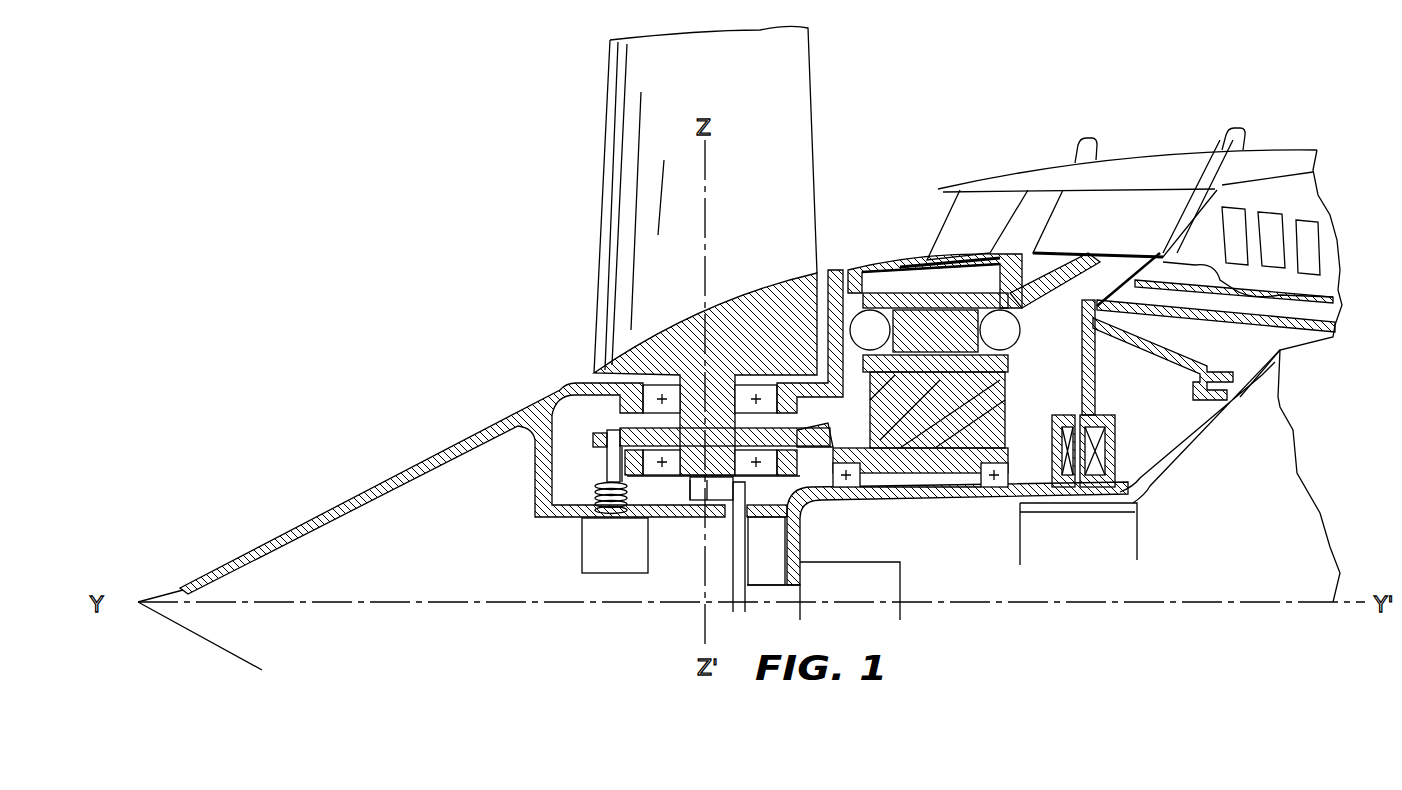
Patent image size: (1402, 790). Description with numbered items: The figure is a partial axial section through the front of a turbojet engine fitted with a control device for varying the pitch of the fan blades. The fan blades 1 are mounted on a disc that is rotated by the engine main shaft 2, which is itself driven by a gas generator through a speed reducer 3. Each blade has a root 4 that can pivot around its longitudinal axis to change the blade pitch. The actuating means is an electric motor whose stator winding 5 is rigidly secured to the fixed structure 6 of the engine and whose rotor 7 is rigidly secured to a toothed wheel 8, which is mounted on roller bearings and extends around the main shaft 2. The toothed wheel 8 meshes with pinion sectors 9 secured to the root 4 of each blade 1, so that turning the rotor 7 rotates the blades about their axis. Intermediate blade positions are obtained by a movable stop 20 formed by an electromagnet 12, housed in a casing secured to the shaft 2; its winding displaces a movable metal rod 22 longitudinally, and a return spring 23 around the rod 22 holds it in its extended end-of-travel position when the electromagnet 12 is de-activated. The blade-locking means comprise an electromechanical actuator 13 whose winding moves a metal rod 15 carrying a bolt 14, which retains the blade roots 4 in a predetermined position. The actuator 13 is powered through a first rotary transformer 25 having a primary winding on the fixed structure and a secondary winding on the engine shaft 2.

The fan blade 1 is at (812, 145).
The engine main shaft 2 is at (836, 268).
The speed reducer 3 is at (1085, 505).
The blade root 4 is at (724, 447).
The stator winding 5 is at (917, 293).
The fixed structure 6 is at (1100, 309).
The rotor 7 is at (955, 423).
The toothed wheel 8 is at (953, 470).
The pinion sector 9 is at (818, 424).
The electromagnet 12 is at (613, 573).
The electromechanical actuator 13 is at (903, 583).
The bolt 14 is at (742, 593).
The metal rod 15 is at (765, 580).
The movable stop 20 is at (603, 428).
The movable metal rod 22 is at (605, 471).
The return spring 23 is at (583, 512).
The first rotary transformer 25 is at (1068, 417).